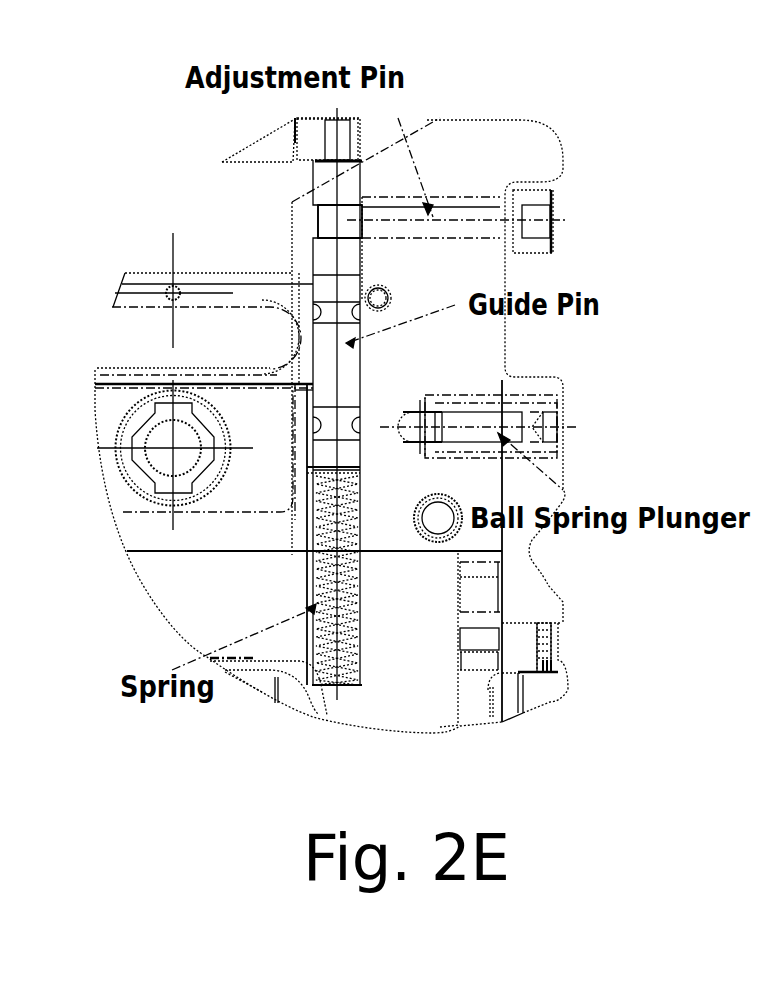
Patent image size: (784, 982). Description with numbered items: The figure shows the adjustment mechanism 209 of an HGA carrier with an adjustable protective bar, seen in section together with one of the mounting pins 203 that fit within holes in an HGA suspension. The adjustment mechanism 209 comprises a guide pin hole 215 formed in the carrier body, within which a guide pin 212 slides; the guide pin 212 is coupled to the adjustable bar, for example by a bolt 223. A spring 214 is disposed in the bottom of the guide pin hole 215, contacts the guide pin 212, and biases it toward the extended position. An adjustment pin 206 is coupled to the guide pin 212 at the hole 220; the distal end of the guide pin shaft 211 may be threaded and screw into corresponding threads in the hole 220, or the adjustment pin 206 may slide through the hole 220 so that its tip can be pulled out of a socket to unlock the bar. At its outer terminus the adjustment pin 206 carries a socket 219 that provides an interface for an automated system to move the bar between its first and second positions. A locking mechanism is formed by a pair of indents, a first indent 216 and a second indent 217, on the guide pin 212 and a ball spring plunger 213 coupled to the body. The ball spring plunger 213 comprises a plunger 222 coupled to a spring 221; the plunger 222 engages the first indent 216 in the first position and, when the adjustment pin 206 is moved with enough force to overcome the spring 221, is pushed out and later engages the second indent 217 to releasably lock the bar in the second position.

The adjustment mechanism 209 is at (446, 70).
The pins 203 is at (334, 118).
The guide pin 212 is at (322, 176).
The bolt 223 is at (350, 137).
The guide pin shaft 211 is at (455, 200).
The socket 219 is at (551, 216).
The adjustment pin 206 is at (553, 246).
The hole 220 is at (316, 218).
The second indent 217 is at (362, 314).
The plunger 222 is at (383, 407).
The spring 221 is at (452, 417).
The ball spring plunger 213 is at (537, 405).
The first indent 216 is at (312, 429).
The spring 214 is at (320, 560).
The guide pin hole 215 is at (312, 639).